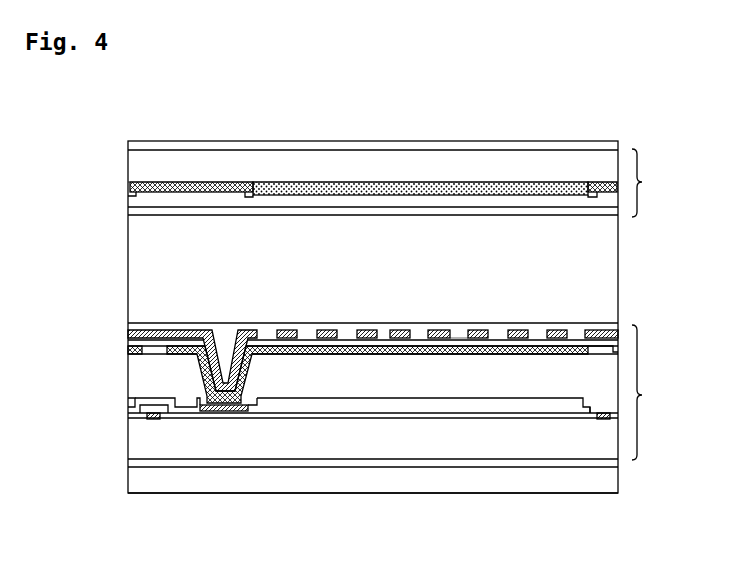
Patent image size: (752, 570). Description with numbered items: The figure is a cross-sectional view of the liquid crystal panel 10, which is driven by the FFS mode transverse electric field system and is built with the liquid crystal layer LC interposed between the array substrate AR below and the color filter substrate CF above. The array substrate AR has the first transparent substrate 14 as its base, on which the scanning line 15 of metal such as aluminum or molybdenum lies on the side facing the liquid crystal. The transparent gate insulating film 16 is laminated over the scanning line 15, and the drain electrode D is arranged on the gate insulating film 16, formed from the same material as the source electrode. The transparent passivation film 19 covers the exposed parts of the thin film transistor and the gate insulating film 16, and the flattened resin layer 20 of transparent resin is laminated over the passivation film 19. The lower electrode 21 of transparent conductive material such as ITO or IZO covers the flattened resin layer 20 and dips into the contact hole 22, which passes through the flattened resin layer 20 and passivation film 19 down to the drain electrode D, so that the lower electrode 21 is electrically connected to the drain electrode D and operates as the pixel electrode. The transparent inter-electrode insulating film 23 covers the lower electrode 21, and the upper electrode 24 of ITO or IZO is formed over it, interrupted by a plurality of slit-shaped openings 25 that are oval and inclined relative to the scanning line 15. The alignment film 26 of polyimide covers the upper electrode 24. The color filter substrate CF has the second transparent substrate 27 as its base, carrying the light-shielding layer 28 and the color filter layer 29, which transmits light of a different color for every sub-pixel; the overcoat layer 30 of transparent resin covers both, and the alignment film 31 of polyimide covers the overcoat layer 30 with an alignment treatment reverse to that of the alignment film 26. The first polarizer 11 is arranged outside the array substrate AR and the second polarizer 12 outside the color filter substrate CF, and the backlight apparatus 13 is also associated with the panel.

The liquid crystal panel 10 is at (73, 101).
The first polarizer 11 is at (530, 463).
The second polarizer 12 is at (440, 147).
The backlight apparatus 13 is at (429, 481).
The first transparent substrate 14 is at (477, 443).
The scanning line 15 is at (153, 420).
The gate insulating film 16 is at (345, 414).
The passivation film 19 is at (288, 412).
The flattened resin layer 20 is at (505, 385).
The lower electrode 21 is at (380, 350).
The contact hole 22 is at (227, 386).
The inter-electrode insulating film 23 is at (413, 343).
The upper electrode 24 is at (244, 330).
The slit-shaped opening 25 is at (304, 330).
The alignment film 26 is at (456, 337).
The second transparent substrate 27 is at (378, 162).
The light-shielding layer 28 is at (178, 184).
The color filter layer 29 is at (330, 187).
The overcoat layer 30 is at (270, 200).
The alignment film 31 is at (227, 214).
The drain electrode D is at (225, 412).
The liquid crystal layer LC is at (573, 247).
The color filter substrate CF is at (653, 183).
The array substrate AR is at (653, 392).